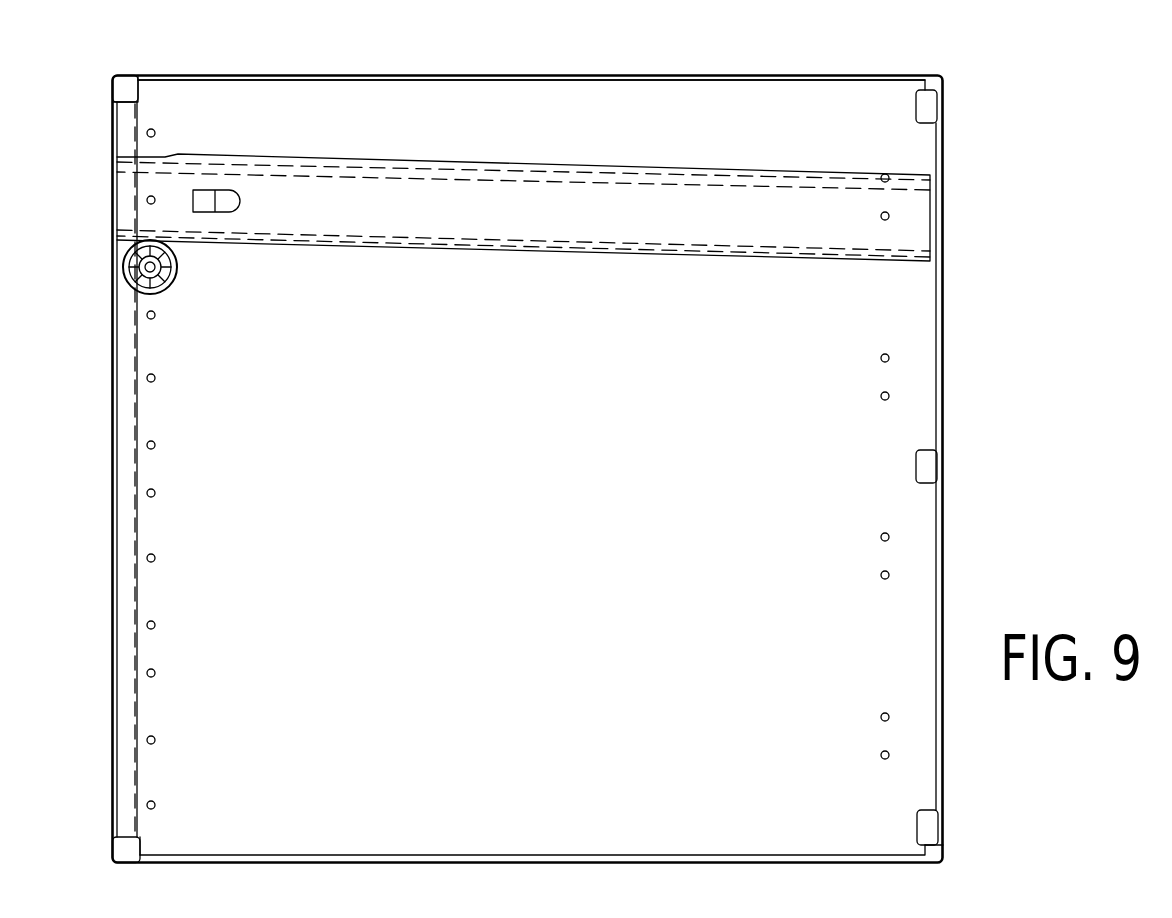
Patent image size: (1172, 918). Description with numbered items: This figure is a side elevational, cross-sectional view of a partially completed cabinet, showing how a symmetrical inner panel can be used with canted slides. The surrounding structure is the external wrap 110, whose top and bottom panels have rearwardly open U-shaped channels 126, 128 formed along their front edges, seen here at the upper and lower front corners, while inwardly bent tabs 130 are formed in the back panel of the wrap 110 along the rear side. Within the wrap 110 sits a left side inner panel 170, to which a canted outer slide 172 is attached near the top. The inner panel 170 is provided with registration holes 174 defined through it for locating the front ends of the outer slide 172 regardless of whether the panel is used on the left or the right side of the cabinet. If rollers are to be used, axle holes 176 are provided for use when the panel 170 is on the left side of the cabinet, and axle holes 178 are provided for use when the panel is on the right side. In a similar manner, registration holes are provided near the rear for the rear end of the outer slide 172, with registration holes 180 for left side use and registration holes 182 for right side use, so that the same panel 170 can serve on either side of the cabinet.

The wrap 110 is at (943, 343).
The U-shaped channel 126 is at (112, 85).
The U-shaped channel 128 is at (113, 850).
The inwardly bent tabs 130 is at (927, 108).
The left side inner panel 170 is at (662, 112).
The canted outer slide 172 is at (601, 228).
The registration holes 174 is at (146, 200).
The axle holes 176 is at (157, 445).
The axle holes 178 is at (157, 133).
The registration holes 180 is at (879, 217).
The registration holes 182 is at (881, 174).